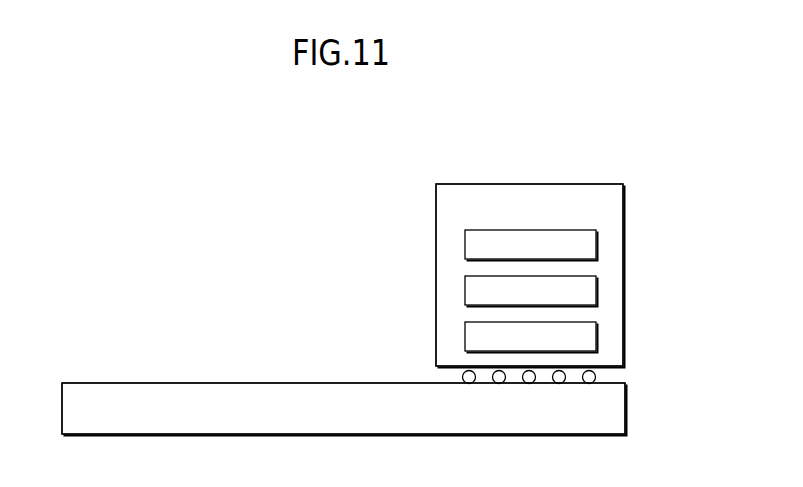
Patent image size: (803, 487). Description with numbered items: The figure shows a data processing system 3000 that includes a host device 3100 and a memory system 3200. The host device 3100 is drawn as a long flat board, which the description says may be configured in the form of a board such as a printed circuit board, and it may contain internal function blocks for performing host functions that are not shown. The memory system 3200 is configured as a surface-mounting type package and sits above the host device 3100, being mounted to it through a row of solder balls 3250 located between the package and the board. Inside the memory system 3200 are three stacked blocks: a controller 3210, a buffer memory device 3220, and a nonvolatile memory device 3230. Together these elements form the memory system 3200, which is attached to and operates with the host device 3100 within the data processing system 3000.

The data processing system 3000 is at (133, 155).
The host device 3100 is at (344, 409).
The memory system 3200 is at (530, 276).
The controller 3210 is at (531, 245).
The buffer memory device 3220 is at (531, 291).
The nonvolatile memory device 3230 is at (531, 337).
The solder balls 3250 is at (606, 378).